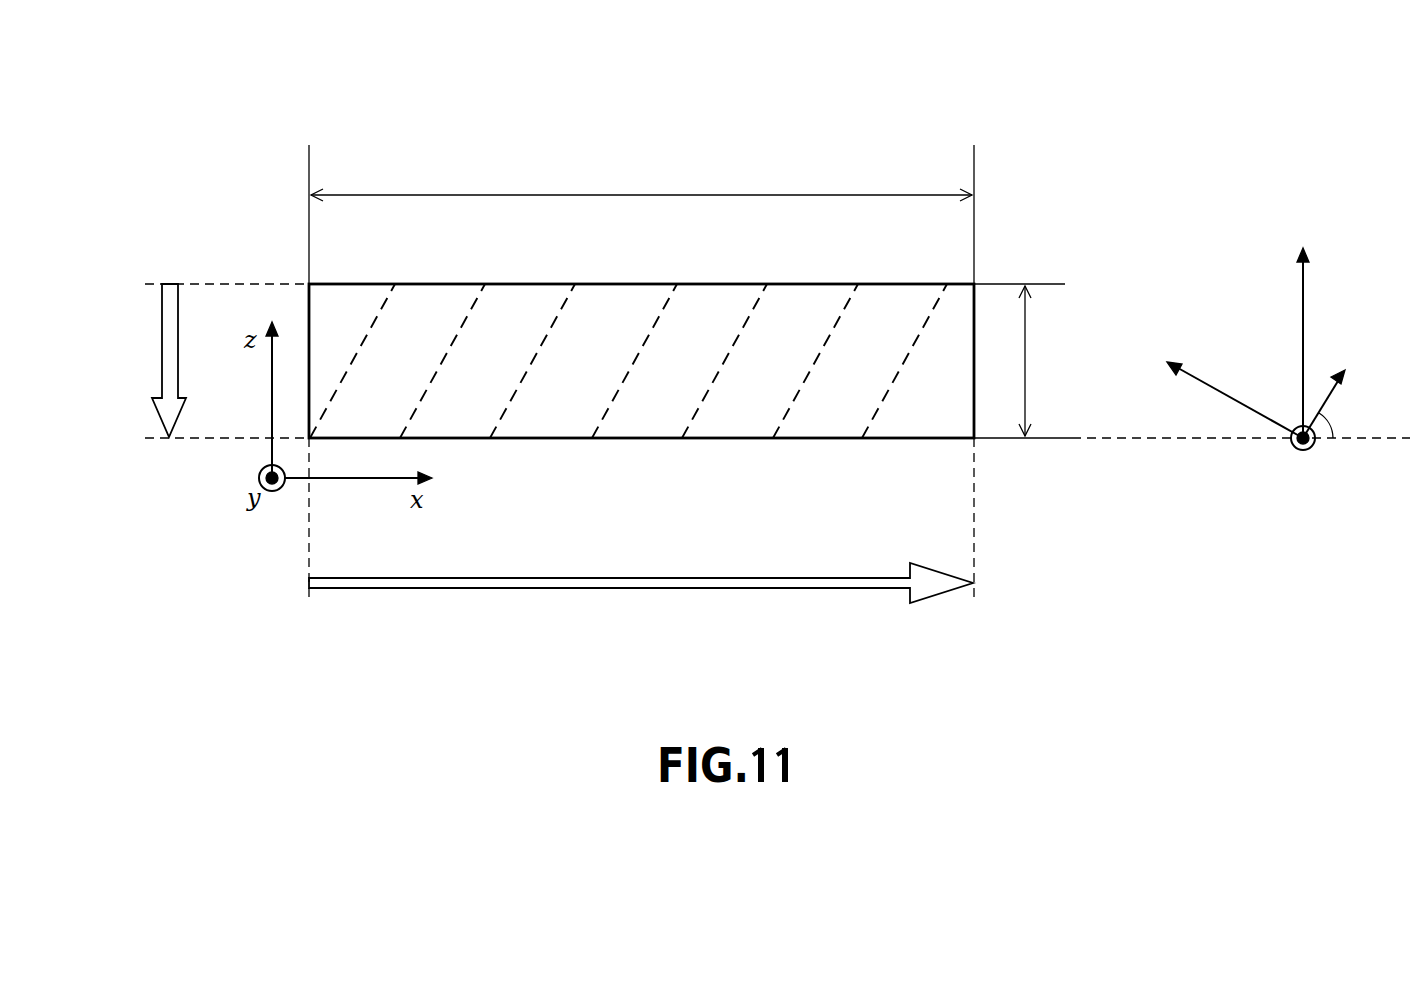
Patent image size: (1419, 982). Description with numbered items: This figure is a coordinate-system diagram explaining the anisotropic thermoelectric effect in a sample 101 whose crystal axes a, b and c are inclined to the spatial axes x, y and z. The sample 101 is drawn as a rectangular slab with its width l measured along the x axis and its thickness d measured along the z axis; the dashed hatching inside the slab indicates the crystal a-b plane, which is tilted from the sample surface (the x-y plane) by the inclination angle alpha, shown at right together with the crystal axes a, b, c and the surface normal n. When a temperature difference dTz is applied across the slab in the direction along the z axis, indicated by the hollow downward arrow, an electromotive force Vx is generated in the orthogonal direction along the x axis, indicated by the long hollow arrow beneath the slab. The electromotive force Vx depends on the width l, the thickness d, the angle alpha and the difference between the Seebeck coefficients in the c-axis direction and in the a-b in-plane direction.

The sample 101 is at (928, 285).
The width of the sample l is at (641, 183).
The thickness of the sample d is at (1034, 361).
The temperature difference dTz is at (144, 360).
The electromotive force Vx is at (641, 567).
The inclination angle alpha is at (1255, 358).